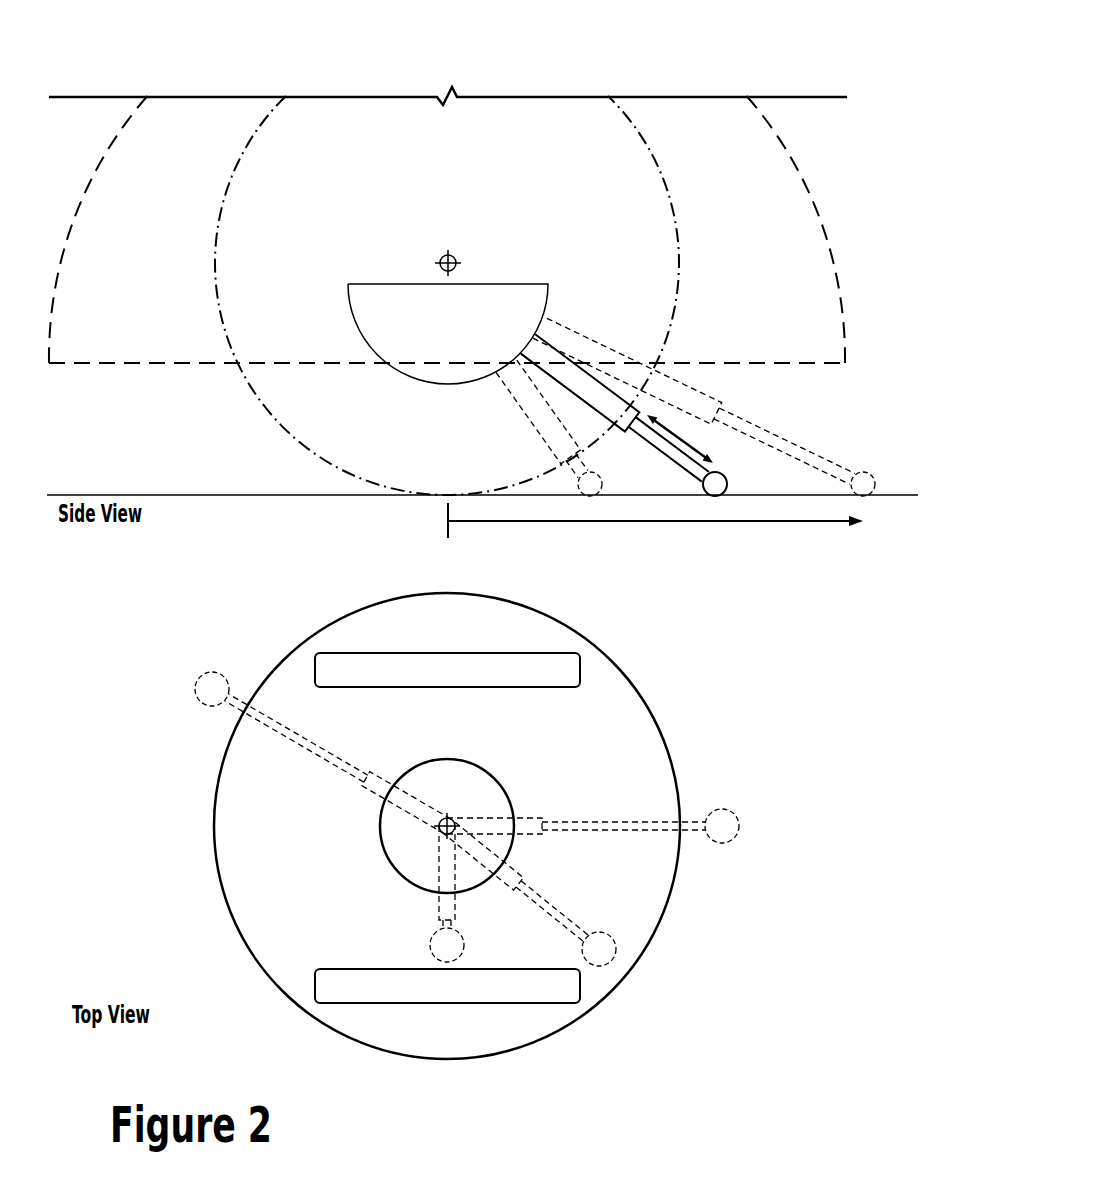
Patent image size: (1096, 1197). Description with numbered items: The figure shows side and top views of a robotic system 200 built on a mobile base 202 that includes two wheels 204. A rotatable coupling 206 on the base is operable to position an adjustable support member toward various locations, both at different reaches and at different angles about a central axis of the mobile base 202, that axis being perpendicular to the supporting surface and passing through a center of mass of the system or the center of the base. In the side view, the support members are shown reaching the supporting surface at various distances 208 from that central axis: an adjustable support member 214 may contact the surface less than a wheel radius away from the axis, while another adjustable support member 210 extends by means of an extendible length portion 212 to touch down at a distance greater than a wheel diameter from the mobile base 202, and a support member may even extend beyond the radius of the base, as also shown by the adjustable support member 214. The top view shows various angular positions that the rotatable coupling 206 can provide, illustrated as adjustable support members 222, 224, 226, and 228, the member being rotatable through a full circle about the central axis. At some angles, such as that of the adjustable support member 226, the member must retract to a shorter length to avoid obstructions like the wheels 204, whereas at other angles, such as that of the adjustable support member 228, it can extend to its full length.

The robotic system 200 is at (617, 52).
The mobile base 202 is at (153, 365).
The wheels 204 is at (307, 448).
The rotatable coupling 206 is at (413, 379).
The distances 208 is at (597, 523).
The adjustable support member 210 is at (680, 462).
The extendible length portion 212 is at (684, 436).
The adjustable support member 214 is at (547, 447).
The adjustable support member 222 is at (660, 820).
The adjustable support member 224 is at (578, 927).
The adjustable support member 226 is at (465, 947).
The adjustable support member 228 is at (280, 735).